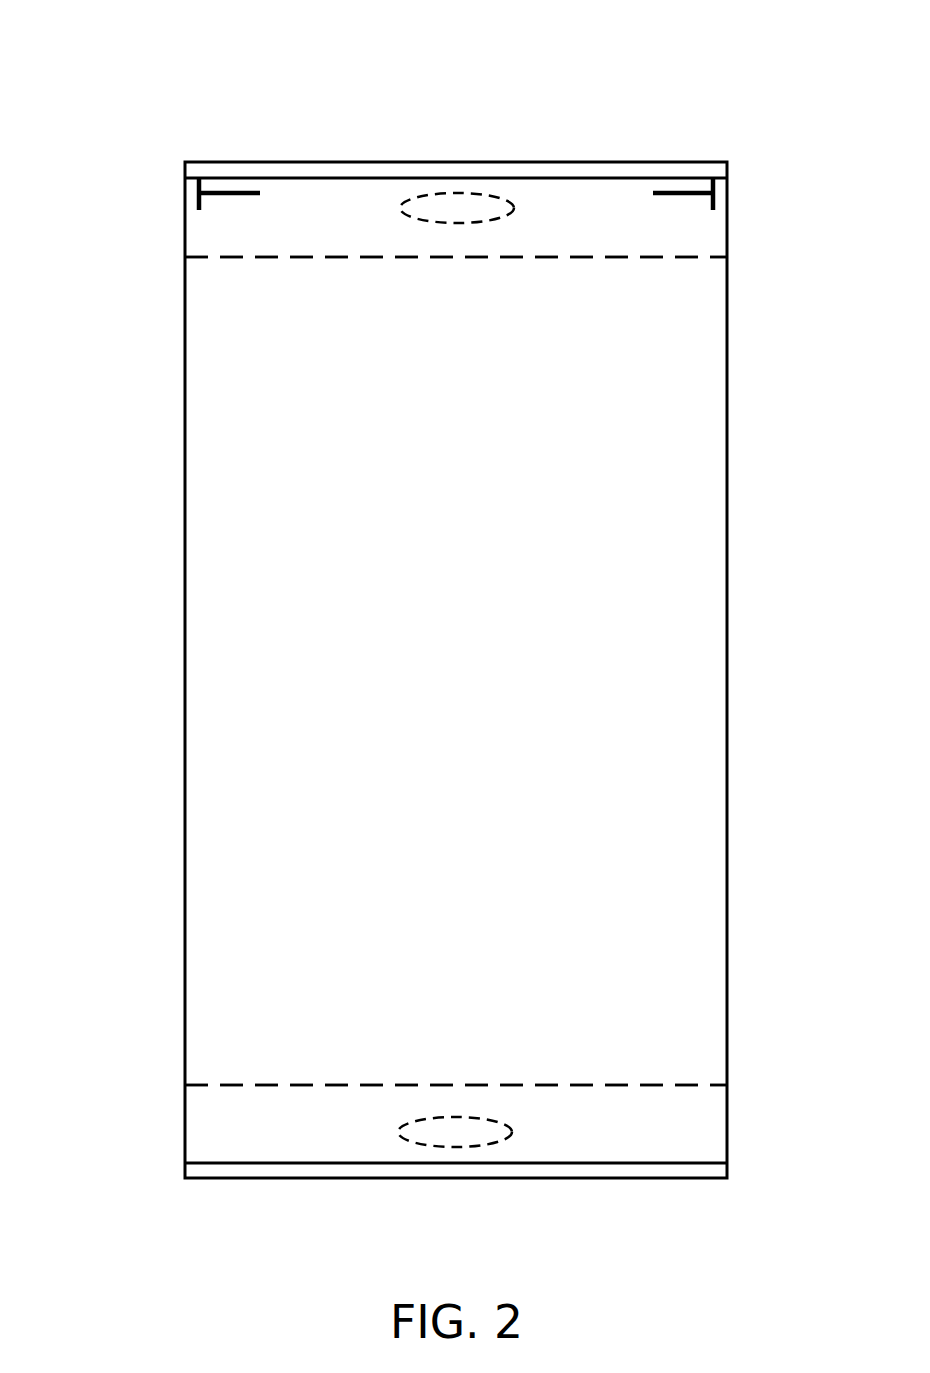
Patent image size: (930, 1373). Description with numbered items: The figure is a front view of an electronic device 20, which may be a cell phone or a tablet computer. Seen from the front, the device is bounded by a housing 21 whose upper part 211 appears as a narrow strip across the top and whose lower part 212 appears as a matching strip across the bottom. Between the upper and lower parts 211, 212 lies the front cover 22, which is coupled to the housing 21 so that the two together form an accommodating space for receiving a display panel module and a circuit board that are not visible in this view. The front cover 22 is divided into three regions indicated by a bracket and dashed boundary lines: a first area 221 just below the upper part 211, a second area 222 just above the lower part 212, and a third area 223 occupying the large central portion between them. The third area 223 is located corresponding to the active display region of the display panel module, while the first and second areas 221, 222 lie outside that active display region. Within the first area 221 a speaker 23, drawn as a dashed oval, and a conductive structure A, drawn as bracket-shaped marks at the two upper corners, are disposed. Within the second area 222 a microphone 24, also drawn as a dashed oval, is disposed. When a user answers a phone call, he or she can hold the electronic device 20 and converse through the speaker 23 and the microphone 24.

The electronic device 20 is at (133, 63).
The housing 21 is at (579, 156).
The upper part of the housing 211 is at (687, 168).
The lower part of the housing 212 is at (685, 1172).
The front cover 22 is at (94, 219).
The first area 221 is at (258, 238).
The second area 222 is at (258, 1126).
The third area 223 is at (258, 494).
The speaker 23 is at (455, 210).
The microphone 24 is at (455, 1128).
The conductive structure A is at (231, 192).